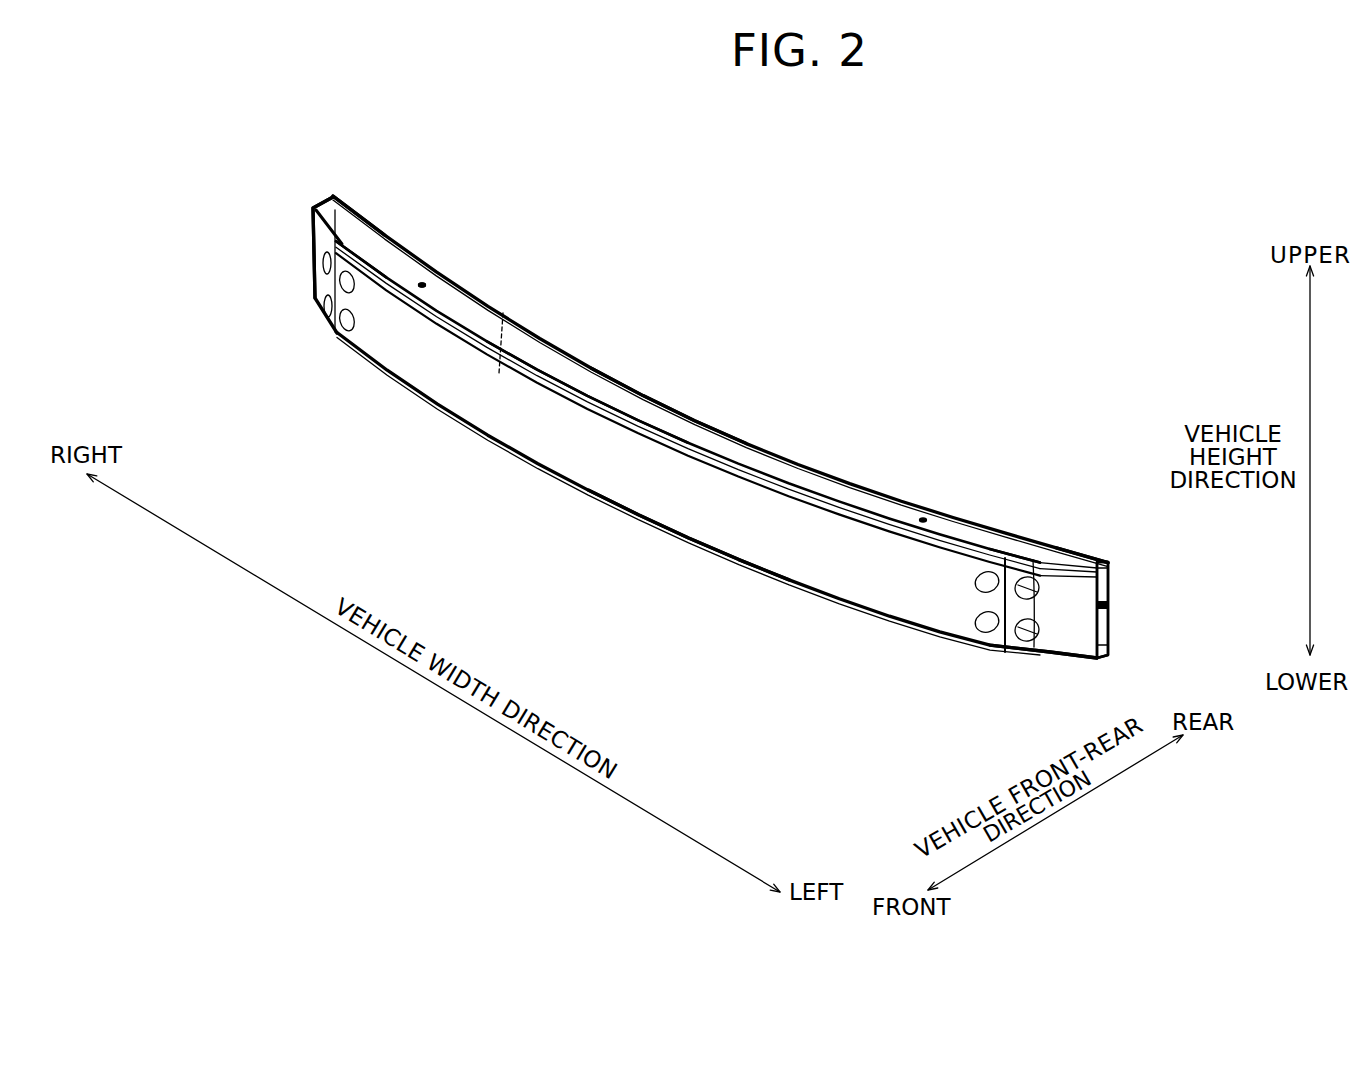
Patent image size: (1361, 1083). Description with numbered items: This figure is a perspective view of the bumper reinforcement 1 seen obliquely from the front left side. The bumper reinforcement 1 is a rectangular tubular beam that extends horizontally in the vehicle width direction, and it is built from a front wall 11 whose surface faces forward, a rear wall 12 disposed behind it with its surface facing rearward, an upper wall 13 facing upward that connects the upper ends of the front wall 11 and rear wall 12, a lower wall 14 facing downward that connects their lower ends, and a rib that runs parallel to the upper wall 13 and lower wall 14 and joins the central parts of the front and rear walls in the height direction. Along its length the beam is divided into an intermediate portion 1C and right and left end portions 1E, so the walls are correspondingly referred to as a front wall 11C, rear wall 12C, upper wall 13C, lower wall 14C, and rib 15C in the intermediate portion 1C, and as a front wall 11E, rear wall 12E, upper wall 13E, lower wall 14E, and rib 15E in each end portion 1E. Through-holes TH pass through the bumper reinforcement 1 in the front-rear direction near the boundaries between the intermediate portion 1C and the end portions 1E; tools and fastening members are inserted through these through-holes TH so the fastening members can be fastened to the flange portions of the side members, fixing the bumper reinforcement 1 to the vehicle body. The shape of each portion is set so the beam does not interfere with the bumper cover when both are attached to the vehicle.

The bumper reinforcement 1 is at (747, 240).
The end portion 1E is at (297, 200).
The intermediate portion 1C is at (488, 493).
The front wall 11 is at (476, 398).
The front wall 11E is at (320, 258).
The front wall 11C is at (660, 497).
The rear wall 12 is at (720, 425).
The rear wall 12E is at (366, 221).
The rear wall 12C is at (648, 395).
The upper wall 13 is at (587, 380).
The upper wall 13E is at (340, 214).
The upper wall 13C is at (537, 355).
The lower wall 14 is at (593, 498).
The lower wall 14E is at (1105, 668).
The lower wall 14C is at (732, 562).
The rib 15E is at (1110, 612).
The rib 15C is at (503, 313).
The through-holes TH is at (320, 310).